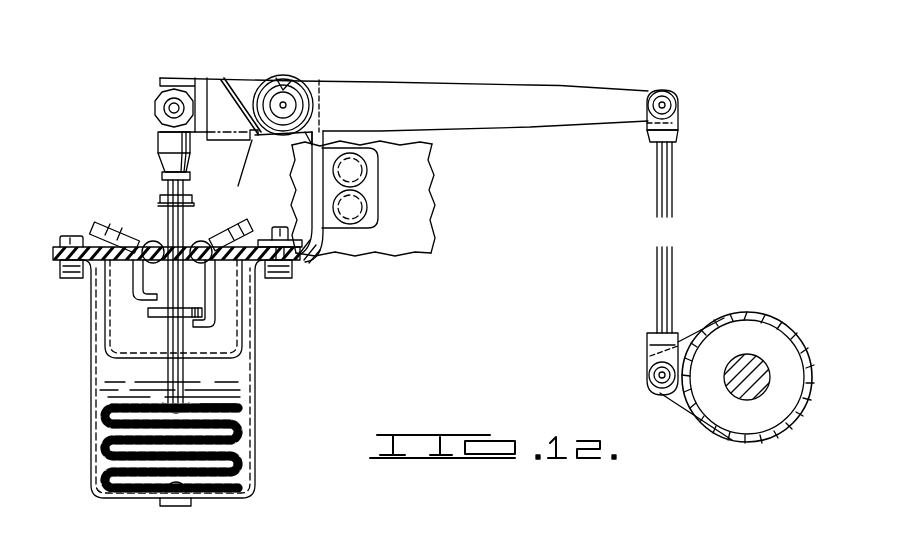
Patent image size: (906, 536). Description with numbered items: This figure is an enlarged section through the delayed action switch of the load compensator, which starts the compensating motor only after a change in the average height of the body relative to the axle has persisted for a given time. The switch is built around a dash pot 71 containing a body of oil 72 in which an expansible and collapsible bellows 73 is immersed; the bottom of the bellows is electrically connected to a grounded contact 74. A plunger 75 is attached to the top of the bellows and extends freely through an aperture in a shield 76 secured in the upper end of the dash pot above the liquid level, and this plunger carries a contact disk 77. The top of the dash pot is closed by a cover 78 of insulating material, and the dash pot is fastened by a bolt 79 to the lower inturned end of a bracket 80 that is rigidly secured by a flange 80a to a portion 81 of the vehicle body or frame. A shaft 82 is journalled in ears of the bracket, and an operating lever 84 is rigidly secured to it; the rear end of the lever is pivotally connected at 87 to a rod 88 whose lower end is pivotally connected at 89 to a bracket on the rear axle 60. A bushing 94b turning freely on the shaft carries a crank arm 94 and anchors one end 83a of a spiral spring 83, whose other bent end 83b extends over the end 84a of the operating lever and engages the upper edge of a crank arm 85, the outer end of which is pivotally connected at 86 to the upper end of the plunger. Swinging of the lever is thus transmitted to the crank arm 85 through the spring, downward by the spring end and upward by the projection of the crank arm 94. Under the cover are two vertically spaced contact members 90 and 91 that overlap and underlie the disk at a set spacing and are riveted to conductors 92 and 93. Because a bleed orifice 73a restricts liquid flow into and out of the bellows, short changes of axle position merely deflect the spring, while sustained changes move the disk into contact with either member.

The rear axle 60 is at (770, 298).
The dash pot 71 is at (260, 383).
The oil 72 is at (246, 404).
The bellows 73 is at (238, 441).
The bleed orifice 73a is at (202, 408).
The contact 74 is at (176, 506).
The plunger 75 is at (184, 340).
The shield 76 is at (255, 340).
The contact disk 77 is at (162, 318).
The cover 78 is at (305, 258).
The bolt 79 is at (278, 228).
The bracket 80 is at (323, 140).
The flange 80a is at (369, 182).
The portion of the body or frame 81 is at (425, 196).
The shaft 82 is at (278, 116).
The spiral spring 83 is at (290, 84).
The anchored end of spiral spring 83a is at (302, 105).
The bent end of spiral spring 83b is at (232, 80).
The operating lever 84 is at (430, 84).
The end of operating lever 84a is at (208, 78).
The crank arm 85 is at (200, 78).
The pivotal connection 86 is at (168, 108).
The pivotal connection 87 is at (678, 106).
The rod 88 is at (657, 200).
The pivotal connection 89 is at (656, 382).
The contact member 90 is at (204, 314).
The contact member 91 is at (146, 302).
The electrical conductor 92 is at (226, 228).
The electrical conductor 93 is at (137, 212).
The crank arm 94 is at (249, 141).
The bushing 94b is at (228, 164).